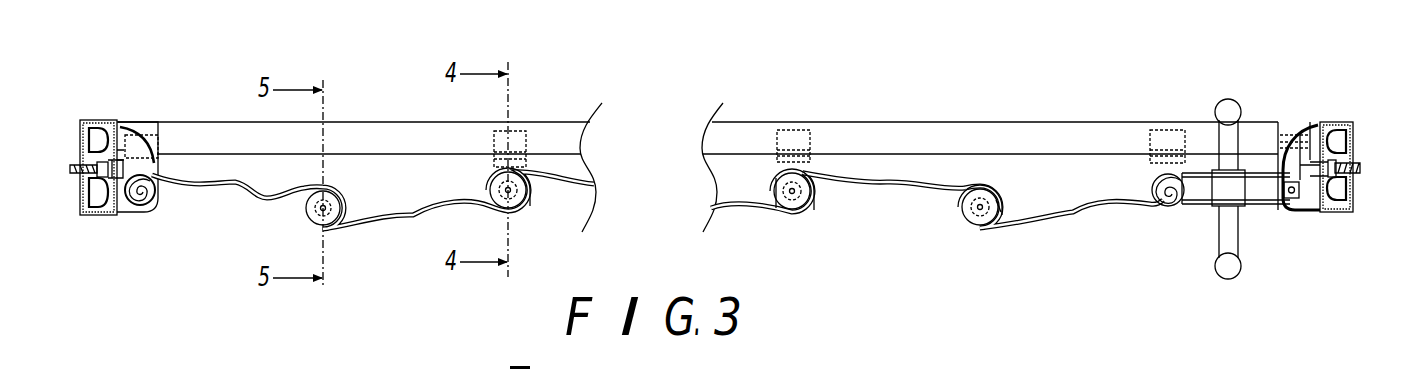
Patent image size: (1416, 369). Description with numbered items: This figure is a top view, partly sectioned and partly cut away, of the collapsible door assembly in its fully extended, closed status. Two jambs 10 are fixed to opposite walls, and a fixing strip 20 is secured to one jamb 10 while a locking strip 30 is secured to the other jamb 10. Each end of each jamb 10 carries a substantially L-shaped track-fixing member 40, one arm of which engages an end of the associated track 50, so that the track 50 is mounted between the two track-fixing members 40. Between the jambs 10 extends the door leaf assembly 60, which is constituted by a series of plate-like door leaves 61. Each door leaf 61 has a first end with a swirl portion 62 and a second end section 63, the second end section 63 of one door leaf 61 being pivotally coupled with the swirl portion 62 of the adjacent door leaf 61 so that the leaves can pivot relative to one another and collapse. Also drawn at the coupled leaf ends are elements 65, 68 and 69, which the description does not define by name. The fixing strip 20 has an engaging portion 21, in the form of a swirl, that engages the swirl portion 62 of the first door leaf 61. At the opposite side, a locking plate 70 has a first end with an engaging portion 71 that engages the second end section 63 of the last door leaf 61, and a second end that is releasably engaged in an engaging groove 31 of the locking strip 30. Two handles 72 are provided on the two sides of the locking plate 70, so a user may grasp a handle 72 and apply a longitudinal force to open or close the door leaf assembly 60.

The jamb 10 is at (85, 120).
The fixing strip 20 is at (125, 122).
The engaging portion 21 is at (150, 212).
The locking strip 30 is at (1316, 127).
The engaging groove 31 is at (1276, 206).
The track-fixing member 40 is at (138, 125).
The track 50 is at (923, 128).
The door leaf assembly 60 is at (1079, 233).
The door leaf 61 is at (908, 190).
The swirl portion 62 is at (815, 155).
The second end section 63 is at (1000, 187).
The roller 65 is at (775, 182).
The housing side plate 68 is at (812, 186).
The hidden bracket 69 is at (793, 130).
The locking plate 70 is at (1192, 206).
The engaging portion 71 is at (1152, 188).
The handle 72 is at (1228, 106).